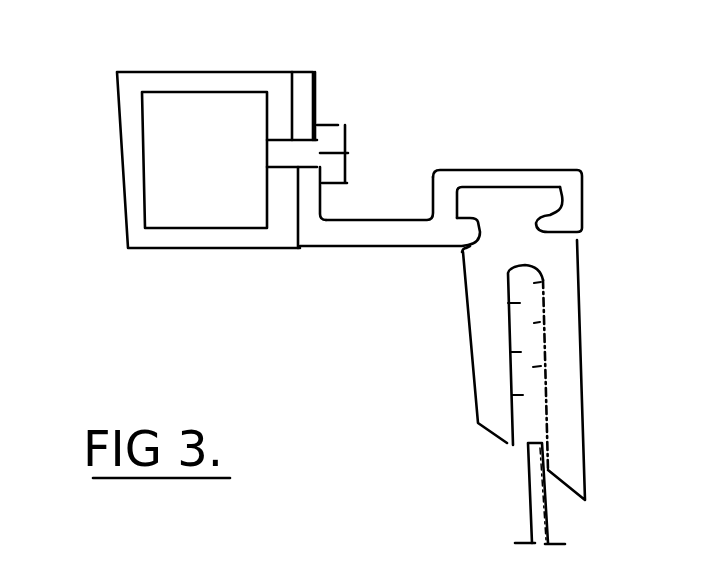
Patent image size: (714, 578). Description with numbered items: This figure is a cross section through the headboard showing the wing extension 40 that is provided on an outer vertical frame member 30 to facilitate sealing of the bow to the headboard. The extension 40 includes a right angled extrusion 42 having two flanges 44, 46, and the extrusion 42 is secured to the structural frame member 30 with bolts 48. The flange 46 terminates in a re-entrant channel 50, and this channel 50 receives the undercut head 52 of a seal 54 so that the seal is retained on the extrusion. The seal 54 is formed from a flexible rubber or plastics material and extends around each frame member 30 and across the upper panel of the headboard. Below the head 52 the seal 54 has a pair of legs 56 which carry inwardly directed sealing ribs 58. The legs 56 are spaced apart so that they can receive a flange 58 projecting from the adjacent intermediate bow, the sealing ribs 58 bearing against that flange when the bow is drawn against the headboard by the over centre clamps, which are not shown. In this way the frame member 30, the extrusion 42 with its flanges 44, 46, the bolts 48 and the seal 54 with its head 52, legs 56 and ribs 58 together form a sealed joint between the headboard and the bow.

The frame member 30 is at (117, 147).
The wing extension 40 is at (450, 91).
The right angled extrusion 42 is at (475, 187).
The flange 44 is at (318, 100).
The flange 46 is at (365, 218).
The bolt 48 is at (350, 144).
The re-entrant channel 50 is at (593, 164).
The undercut head 52 is at (537, 204).
The seal 54 is at (545, 392).
The leg 56 is at (478, 402).
The sealing rib 58 is at (537, 368).